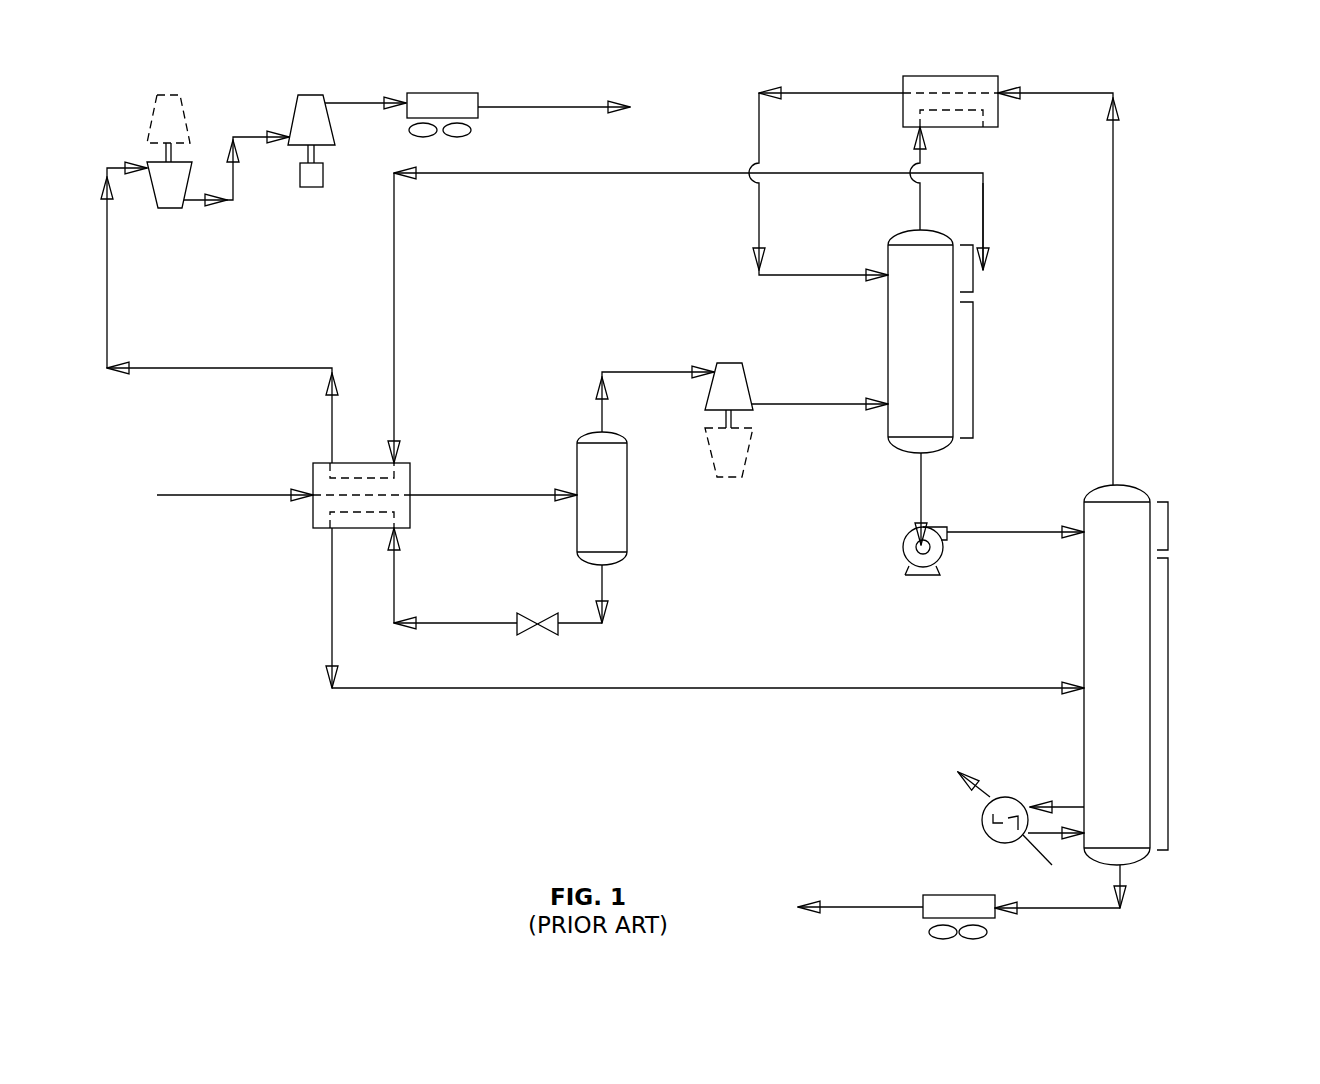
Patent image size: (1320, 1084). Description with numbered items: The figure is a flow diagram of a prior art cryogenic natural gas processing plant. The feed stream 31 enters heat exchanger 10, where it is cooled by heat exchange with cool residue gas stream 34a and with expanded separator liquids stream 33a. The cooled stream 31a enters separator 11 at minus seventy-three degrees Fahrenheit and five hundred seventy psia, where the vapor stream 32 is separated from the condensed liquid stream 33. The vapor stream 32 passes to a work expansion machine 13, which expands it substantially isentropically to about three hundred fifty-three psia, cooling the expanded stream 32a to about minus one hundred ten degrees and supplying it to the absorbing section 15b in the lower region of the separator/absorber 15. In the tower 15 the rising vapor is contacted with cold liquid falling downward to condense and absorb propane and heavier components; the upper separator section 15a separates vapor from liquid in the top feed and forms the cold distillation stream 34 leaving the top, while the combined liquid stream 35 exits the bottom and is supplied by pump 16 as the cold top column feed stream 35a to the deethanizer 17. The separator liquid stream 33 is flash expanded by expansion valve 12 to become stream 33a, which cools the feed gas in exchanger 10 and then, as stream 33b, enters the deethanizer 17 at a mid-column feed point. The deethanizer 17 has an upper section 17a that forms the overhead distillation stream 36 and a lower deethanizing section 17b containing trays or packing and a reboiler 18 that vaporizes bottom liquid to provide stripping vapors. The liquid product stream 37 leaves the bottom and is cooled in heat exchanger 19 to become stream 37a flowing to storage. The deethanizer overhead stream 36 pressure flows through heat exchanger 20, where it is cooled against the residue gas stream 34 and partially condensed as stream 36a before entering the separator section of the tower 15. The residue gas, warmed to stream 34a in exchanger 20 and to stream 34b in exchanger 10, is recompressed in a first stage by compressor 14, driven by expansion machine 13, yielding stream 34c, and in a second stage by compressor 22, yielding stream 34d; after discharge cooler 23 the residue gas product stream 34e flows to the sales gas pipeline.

The heat exchanger 10 is at (363, 463).
The separator 11 is at (627, 528).
The expansion valve 12 is at (520, 616).
The work expansion machine 13 is at (168, 95).
The compressor 14 is at (170, 208).
The separator/absorber tower 15 is at (888, 342).
The separator section 15a is at (973, 271).
The absorbing section 15b is at (973, 376).
The pump 16 is at (904, 560).
The deethanizer 17 is at (1084, 628).
The upper section 17a is at (1168, 524).
The deethanizing section 17b is at (1170, 692).
The reboiler 18 is at (982, 820).
The heat exchanger 19 is at (958, 895).
The heat exchanger 20 is at (903, 108).
The compressor 22 is at (310, 95).
The discharge cooler 23 is at (442, 93).
The feed stream 31 is at (172, 495).
The cooled stream 31a is at (488, 497).
The vapor stream 32 is at (650, 374).
The expanded stream 32a is at (810, 406).
The condensed liquid stream 33 is at (603, 585).
The expanded liquid stream 33a is at (465, 625).
The warmed liquid stream 33b is at (862, 690).
The cold distillation stream 34 is at (920, 207).
The residue gas stream 34a is at (597, 175).
The residue gas stream 34b is at (205, 372).
The residue gas stream 34c is at (233, 175).
The residue gas stream 34d is at (358, 103).
The residue gas product stream 34e is at (594, 107).
The combined liquid stream 35 is at (922, 485).
The cold top column feed stream 35a is at (1003, 534).
The distillation stream 36 is at (1063, 96).
The partially condensed stream 36a is at (817, 278).
The liquid product stream 37 is at (1070, 909).
The cooled liquid product stream 37a is at (862, 909).